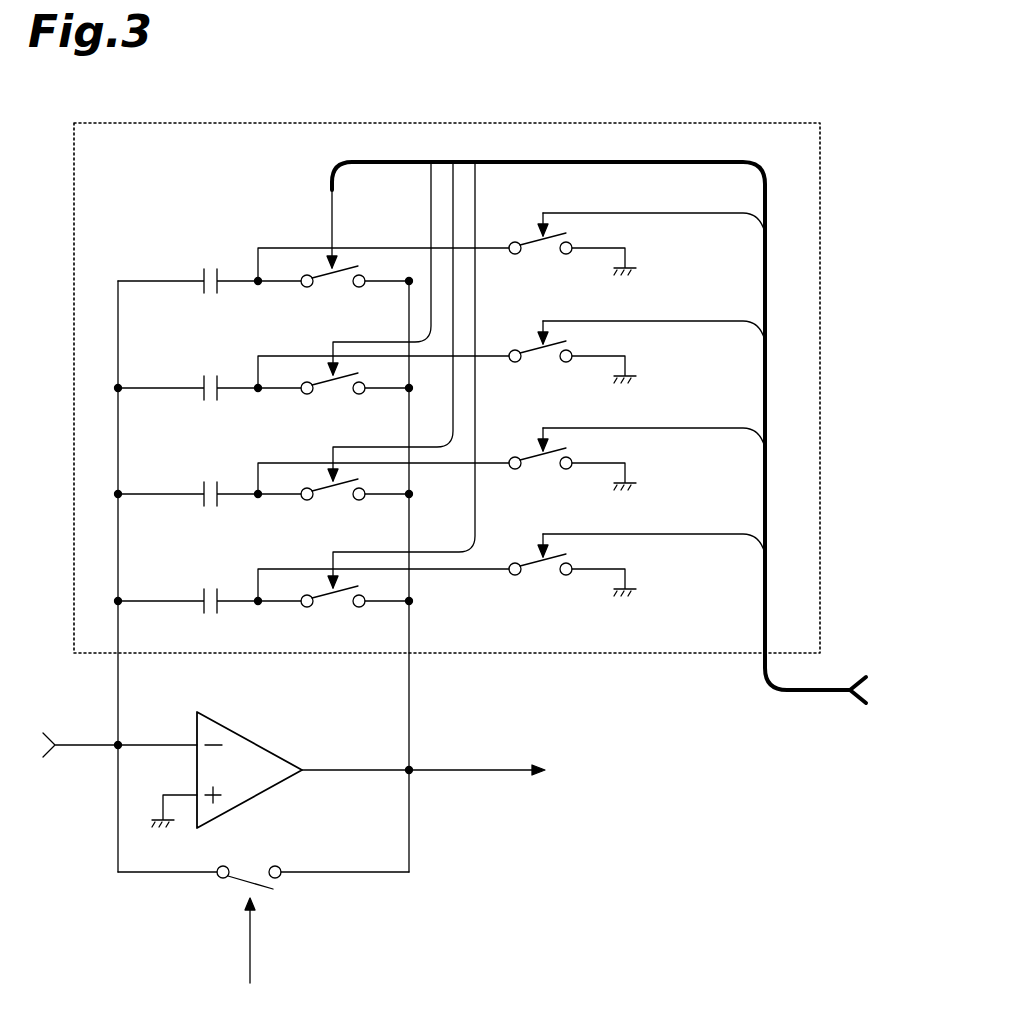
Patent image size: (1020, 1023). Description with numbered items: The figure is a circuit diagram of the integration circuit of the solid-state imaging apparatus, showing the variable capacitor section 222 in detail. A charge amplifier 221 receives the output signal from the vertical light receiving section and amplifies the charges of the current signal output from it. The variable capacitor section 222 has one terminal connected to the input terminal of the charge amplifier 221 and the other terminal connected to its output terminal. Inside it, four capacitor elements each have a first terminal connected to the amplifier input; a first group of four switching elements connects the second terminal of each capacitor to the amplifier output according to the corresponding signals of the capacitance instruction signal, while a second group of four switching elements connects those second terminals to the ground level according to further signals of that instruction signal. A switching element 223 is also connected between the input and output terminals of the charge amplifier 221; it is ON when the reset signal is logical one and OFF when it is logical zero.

The charge amplifier 221 is at (256, 800).
The variable capacitor section 222 is at (78, 202).
The switching element 223 is at (256, 853).